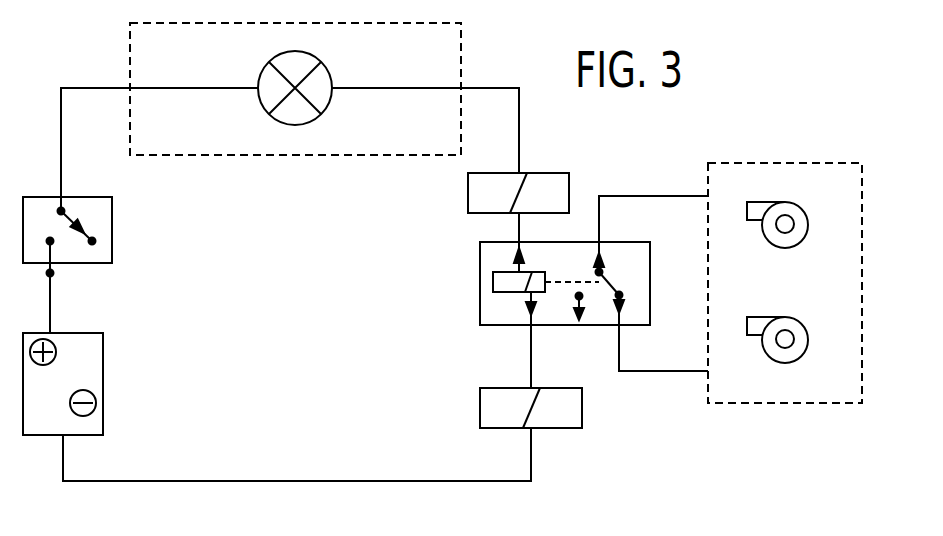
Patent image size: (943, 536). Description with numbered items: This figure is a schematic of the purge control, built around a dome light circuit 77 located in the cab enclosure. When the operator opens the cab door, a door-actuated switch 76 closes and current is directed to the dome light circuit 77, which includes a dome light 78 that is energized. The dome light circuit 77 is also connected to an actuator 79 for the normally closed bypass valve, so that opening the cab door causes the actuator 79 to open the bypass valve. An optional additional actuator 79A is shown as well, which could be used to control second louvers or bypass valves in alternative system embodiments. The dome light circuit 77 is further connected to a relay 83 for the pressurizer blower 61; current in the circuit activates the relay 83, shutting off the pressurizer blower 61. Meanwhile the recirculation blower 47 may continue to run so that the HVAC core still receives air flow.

The dome light circuit 77 is at (461, 62).
The dome light 78 is at (295, 125).
The door-actuated switch 76 is at (112, 228).
The actuator 79 is at (547, 173).
The additional actuator 79A is at (555, 428).
The relay 83 is at (480, 282).
The pressurizer blower 61 is at (798, 212).
The recirculation blower 47 is at (802, 345).